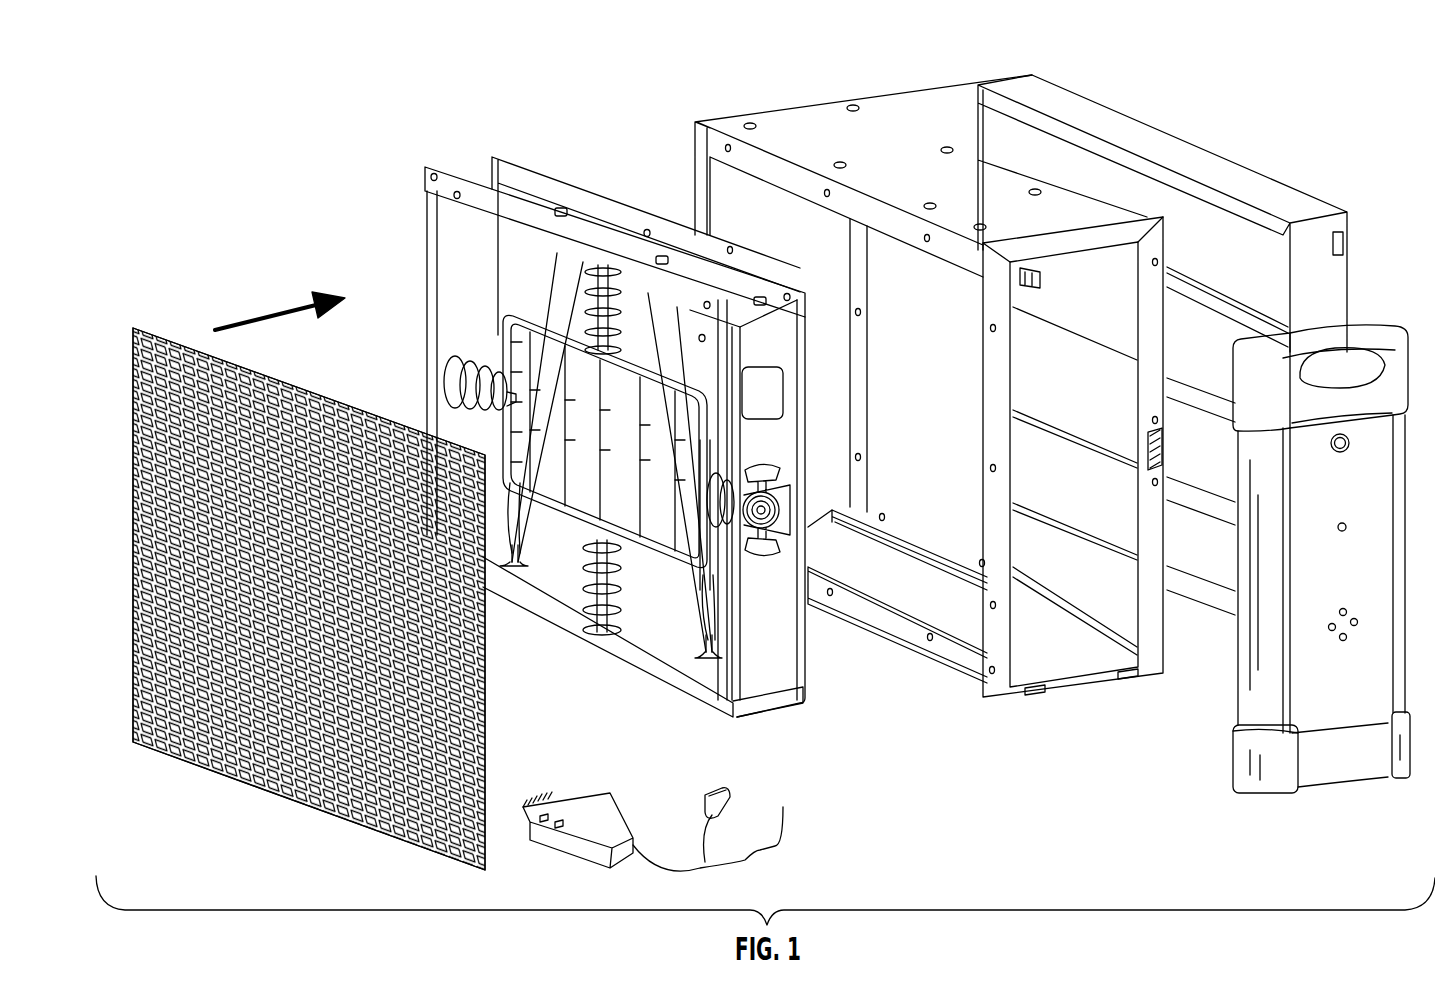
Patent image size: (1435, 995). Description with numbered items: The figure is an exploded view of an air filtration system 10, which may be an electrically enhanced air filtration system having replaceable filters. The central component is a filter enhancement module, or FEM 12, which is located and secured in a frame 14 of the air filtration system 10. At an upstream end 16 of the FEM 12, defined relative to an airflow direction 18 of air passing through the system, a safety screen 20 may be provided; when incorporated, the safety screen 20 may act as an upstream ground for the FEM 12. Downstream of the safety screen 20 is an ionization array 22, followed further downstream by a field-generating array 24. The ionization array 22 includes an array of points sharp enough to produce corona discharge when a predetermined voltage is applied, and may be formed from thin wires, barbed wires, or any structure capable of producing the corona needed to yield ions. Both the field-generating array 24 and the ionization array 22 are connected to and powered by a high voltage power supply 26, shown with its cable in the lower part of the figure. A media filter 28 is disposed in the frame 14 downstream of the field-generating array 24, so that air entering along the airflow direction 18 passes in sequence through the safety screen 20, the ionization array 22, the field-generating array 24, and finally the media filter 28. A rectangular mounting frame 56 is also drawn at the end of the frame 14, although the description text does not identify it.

The air filtration system 10 is at (510, 98).
The filter enhancement module 12 is at (430, 167).
The frame 14 is at (800, 122).
The upstream end 16 is at (148, 347).
The airflow direction 18 is at (275, 292).
The safety screen 20 is at (345, 803).
The ionization array 22 is at (513, 317).
The field-generating array 24 is at (712, 655).
The high voltage power supply 26 is at (617, 858).
The media filter 28 is at (1070, 108).
The mounting frame 56 is at (1130, 250).